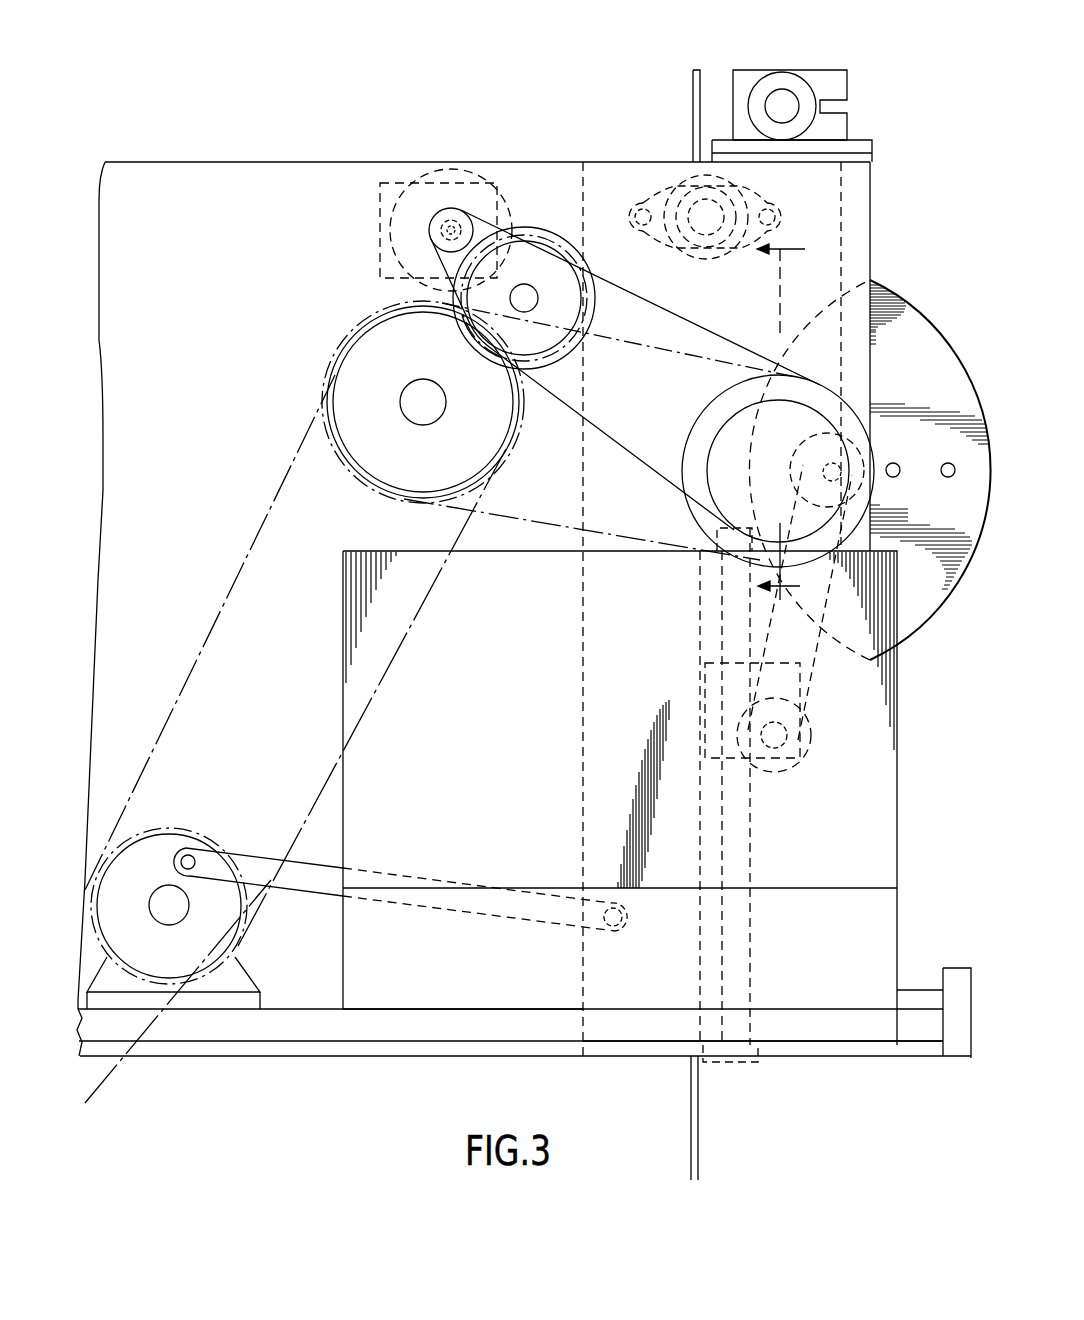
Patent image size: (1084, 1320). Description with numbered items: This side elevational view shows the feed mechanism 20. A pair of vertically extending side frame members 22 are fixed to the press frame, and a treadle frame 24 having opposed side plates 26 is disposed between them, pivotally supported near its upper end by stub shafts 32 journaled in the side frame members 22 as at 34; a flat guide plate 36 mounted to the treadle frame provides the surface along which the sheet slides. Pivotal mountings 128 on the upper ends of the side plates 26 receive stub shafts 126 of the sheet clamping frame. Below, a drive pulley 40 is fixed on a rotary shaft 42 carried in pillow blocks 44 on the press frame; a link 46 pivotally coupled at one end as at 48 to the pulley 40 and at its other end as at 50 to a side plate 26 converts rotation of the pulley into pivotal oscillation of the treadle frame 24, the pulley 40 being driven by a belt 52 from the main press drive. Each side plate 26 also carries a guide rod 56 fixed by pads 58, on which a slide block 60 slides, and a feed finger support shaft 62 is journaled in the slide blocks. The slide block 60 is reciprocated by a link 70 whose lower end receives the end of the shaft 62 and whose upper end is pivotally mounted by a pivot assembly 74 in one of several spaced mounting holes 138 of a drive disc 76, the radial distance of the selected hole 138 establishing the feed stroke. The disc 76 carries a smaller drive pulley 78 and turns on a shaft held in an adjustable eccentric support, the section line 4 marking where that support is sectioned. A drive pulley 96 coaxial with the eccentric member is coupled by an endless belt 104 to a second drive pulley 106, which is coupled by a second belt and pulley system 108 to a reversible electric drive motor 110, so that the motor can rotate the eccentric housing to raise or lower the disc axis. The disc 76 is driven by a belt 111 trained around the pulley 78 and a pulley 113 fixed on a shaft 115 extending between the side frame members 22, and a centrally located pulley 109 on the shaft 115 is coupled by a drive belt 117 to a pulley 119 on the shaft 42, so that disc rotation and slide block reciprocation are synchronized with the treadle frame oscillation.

The section line 4- 4 is at (788, 418).
The feed mechanism 20 is at (888, 263).
The side frame members 22 is at (568, 205).
The treadle frame 24 is at (578, 681).
The side plates 26 is at (580, 959).
The stub shafts 32 is at (697, 229).
The journal 34 is at (677, 207).
The guide plate 36 is at (692, 92).
The drive pulley 40 is at (206, 852).
The rotary shaft 42 is at (185, 908).
The pillow blocks 44 is at (240, 980).
The link 46 is at (324, 886).
The pivotal coupling 48 is at (180, 863).
The pivotal coupling 50 is at (622, 915).
The belt 52 is at (112, 1080).
The guide rod 56 is at (722, 611).
The pads 58 is at (717, 530).
The slide block 60 is at (800, 690).
The feed finger support shaft 62 is at (788, 734).
The link 70 is at (837, 588).
The pivot assembly 74 is at (800, 460).
The drive disc 76 is at (938, 606).
The drive pulley 78 is at (840, 383).
The drive pulley 96 is at (730, 413).
The endless belt 104 is at (692, 458).
The second drive pulley 106 is at (584, 327).
The second belt and pulley system 108 is at (440, 268).
The pulley 109 is at (368, 456).
The reversible electric drive motor 110 is at (430, 178).
The belt 111 is at (538, 522).
The pulley 113 is at (515, 440).
The shaft 115 is at (446, 402).
The drive belt 117 is at (316, 802).
The pulley 119 is at (171, 828).
The stub shafts 126 is at (784, 92).
The pivotal mountings 128 is at (828, 85).
The mounting holes 138 is at (946, 462).